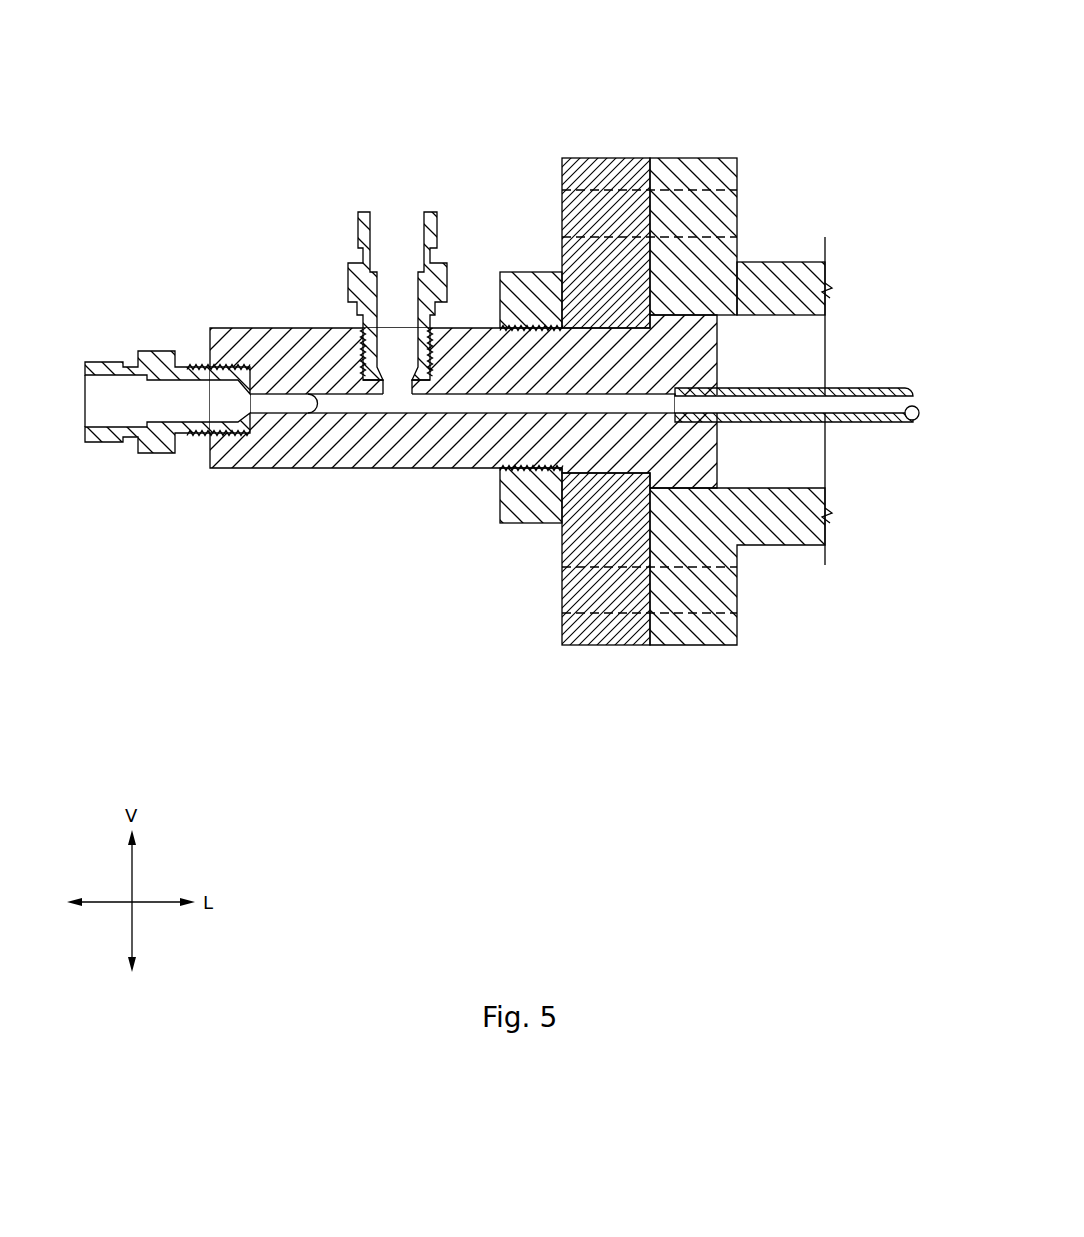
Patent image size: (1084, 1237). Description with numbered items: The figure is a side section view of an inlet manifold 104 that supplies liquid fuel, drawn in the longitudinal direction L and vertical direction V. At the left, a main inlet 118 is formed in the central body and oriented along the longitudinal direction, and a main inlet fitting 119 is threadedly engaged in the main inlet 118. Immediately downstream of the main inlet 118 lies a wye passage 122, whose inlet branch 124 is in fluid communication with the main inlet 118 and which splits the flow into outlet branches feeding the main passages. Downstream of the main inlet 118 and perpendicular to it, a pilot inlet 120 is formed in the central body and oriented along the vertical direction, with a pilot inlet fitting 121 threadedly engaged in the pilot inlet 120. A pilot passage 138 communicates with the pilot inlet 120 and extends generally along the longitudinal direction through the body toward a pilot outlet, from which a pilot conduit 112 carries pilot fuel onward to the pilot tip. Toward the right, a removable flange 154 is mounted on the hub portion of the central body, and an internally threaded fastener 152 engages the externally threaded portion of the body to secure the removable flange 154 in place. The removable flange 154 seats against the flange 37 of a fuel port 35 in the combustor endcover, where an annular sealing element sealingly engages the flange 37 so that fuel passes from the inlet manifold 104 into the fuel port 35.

The inlet manifold 104 is at (383, 110).
The removable flange 154 is at (605, 158).
The flange 37 is at (712, 175).
The fuel port 35 is at (782, 262).
The pilot inlet fitting 121 is at (362, 235).
The pilot inlet 120 is at (428, 372).
The inlet branch 124 is at (285, 407).
The main inlet fitting 119 is at (105, 365).
The main inlet 118 is at (226, 433).
The wye passage 122 is at (298, 422).
The pilot passage 138 is at (530, 410).
The internally threaded fastener 152 is at (520, 512).
The pilot conduit 112 is at (878, 405).